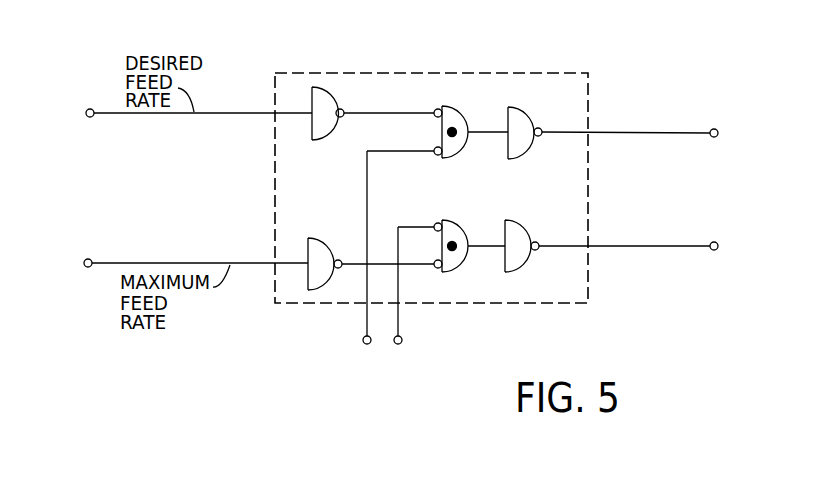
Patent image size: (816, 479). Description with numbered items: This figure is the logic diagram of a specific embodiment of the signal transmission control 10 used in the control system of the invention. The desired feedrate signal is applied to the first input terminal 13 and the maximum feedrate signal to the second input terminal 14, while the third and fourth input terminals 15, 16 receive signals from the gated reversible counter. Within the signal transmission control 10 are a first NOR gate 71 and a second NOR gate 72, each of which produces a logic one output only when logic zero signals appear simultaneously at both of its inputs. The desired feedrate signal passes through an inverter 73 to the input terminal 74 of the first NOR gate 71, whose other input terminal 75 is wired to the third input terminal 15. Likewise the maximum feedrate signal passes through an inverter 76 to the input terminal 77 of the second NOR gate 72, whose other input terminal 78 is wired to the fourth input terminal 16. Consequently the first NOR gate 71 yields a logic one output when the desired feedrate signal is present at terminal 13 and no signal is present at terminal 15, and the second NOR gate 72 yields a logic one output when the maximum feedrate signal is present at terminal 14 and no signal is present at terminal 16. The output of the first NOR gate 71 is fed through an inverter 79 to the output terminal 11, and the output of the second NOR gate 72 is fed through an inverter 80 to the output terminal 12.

The signal transmission control 10 is at (373, 75).
The output terminal 11 is at (712, 129).
The output terminal 12 is at (712, 242).
The first input terminal 13 is at (92, 117).
The second input terminal 14 is at (87, 259).
The third input terminal 15 is at (364, 343).
The fourth input terminal 16 is at (401, 343).
The first NOR gate 71 is at (465, 110).
The second NOR gate 72 is at (468, 227).
The inverter 73 is at (333, 126).
The input terminal of NOR gate 71 74 is at (421, 112).
The input terminal of NOR gate 71 75 is at (415, 153).
The inverter 76 is at (341, 237).
The input terminal of NOR gate 72 77 is at (428, 267).
The input terminal of NOR gate 72 78 is at (423, 226).
The inverter 79 is at (530, 123).
The inverter 80 is at (527, 236).